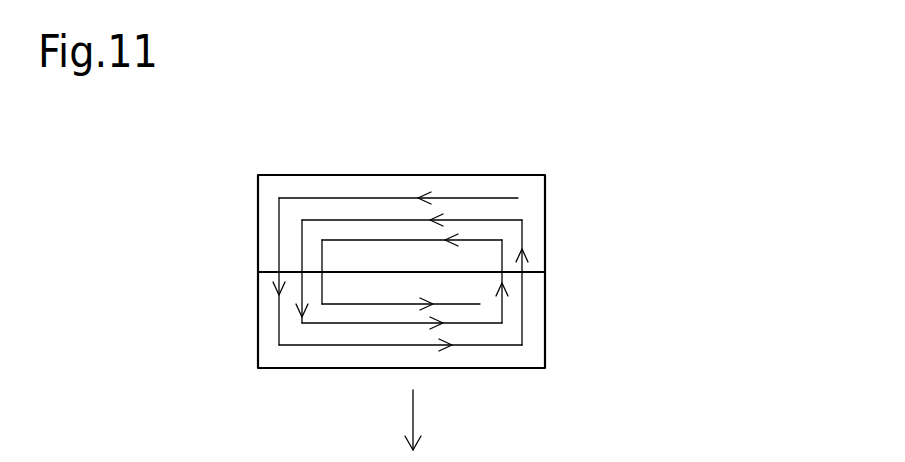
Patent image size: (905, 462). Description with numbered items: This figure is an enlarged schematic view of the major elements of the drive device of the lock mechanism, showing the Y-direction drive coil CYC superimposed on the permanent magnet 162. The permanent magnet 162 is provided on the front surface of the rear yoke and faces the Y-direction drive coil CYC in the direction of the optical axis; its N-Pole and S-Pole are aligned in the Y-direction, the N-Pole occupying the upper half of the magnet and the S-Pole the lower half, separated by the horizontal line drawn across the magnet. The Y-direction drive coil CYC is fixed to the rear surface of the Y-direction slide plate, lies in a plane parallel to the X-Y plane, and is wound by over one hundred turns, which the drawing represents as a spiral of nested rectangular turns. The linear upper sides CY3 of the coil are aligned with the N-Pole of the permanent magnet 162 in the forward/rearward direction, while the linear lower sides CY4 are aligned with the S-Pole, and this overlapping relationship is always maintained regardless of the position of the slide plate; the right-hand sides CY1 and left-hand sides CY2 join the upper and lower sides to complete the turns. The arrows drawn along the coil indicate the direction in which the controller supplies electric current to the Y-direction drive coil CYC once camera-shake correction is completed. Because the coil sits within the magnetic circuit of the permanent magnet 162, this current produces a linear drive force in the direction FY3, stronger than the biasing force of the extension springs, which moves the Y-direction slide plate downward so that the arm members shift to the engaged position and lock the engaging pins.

The permanent magnet 162 is at (537, 229).
The N-pole of the permanent magnet N-Pole is at (272, 188).
The S-pole of the permanent magnet S-Pole is at (270, 348).
The Y-direction drive coil CYC is at (407, 268).
The side of the Y-direction drive coil CY1 is at (503, 308).
The side of the Y-direction drive coil CY2 is at (322, 242).
The linear upper sides of the Y-direction drive coil CY3 is at (420, 240).
The linear lower sides of the Y-direction drive coil CY4 is at (334, 304).
The direction of linear drive force FY3 is at (413, 406).